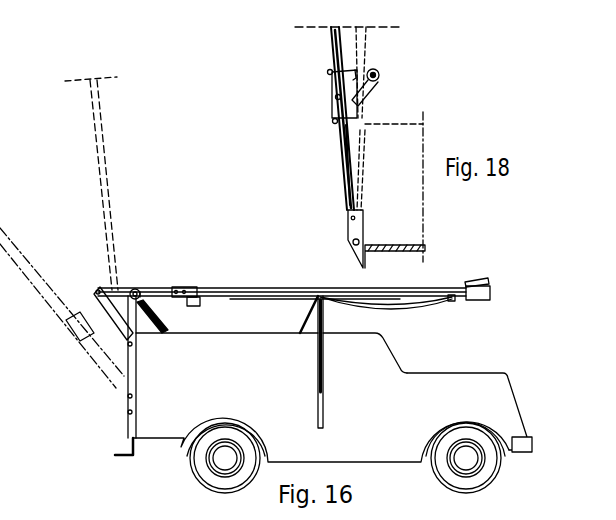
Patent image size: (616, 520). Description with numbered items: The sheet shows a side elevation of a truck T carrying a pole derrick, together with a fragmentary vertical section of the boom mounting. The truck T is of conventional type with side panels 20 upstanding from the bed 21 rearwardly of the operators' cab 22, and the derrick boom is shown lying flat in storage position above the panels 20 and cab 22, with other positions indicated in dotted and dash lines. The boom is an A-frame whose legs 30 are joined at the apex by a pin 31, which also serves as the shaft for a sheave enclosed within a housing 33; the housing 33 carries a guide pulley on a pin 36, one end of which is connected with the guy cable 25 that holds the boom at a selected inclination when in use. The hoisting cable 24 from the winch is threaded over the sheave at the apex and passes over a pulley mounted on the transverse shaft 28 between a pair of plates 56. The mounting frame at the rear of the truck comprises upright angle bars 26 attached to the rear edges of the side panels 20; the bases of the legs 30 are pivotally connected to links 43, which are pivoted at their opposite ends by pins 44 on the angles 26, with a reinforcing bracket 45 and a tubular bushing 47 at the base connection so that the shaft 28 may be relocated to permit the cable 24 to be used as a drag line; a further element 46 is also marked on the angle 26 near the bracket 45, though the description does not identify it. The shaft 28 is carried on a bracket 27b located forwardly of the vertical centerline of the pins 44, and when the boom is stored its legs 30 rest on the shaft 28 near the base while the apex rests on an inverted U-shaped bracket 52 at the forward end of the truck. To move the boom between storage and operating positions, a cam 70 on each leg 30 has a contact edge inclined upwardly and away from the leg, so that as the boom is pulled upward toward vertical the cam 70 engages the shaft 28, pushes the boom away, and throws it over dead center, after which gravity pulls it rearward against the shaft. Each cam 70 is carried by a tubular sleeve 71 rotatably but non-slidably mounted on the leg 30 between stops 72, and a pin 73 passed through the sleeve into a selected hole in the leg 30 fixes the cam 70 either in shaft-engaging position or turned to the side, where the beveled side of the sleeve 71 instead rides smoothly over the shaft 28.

In FIG. 16, the side panel 20 is at (226, 358).
In FIG. 18, the side panel 20 is at (407, 193).
In FIG. 18, the bed 21 is at (414, 243).
In FIG. 16, the operators' cab 22 is at (367, 365).
In FIG. 16, the hoisting cable 24 is at (262, 297).
In FIG. 16, the guy cable 25 is at (386, 304).
In FIG. 16, the upright angle bar 26 is at (136, 382).
In FIG. 16, the bracket 27b is at (130, 290).
In FIG. 18, the bracket 27b is at (379, 72).
In FIG. 16, the transverse shaft 28 is at (148, 304).
In FIG. 18, the transverse shaft 28 is at (380, 80).
In FIG. 16, the leg 30 is at (95, 148).
In FIG. 18, the leg 30 is at (331, 45).
In FIG. 16, the pin 31 is at (482, 300).
In FIG. 16, the housing 33 is at (489, 280).
In FIG. 16, the pin 36 is at (452, 301).
In FIG. 16, the link 43 is at (112, 322).
In FIG. 18, the link 43 is at (354, 146).
In FIG. 16, the pin 44 is at (133, 345).
In FIG. 18, the bracket 45 is at (349, 233).
In FIG. 16, the hole 46 is at (133, 397).
In FIG. 16, the tubular bushing 47 is at (133, 412).
In FIG. 16, the inverted U-shaped bracket 52 is at (324, 312).
In FIG. 16, the plates 56 is at (146, 296).
In FIG. 16, the cam 70 is at (194, 306).
In FIG. 18, the cam 70 is at (355, 70).
In FIG. 16, the tubular sleeve 71 is at (74, 335).
In FIG. 18, the tubular sleeve 71 is at (332, 88).
In FIG. 16, the stops 72 is at (198, 289).
In FIG. 18, the stops 72 is at (328, 70).
In FIG. 18, the pin 73 is at (336, 99).
In FIG. 16, the truck T is at (429, 367).